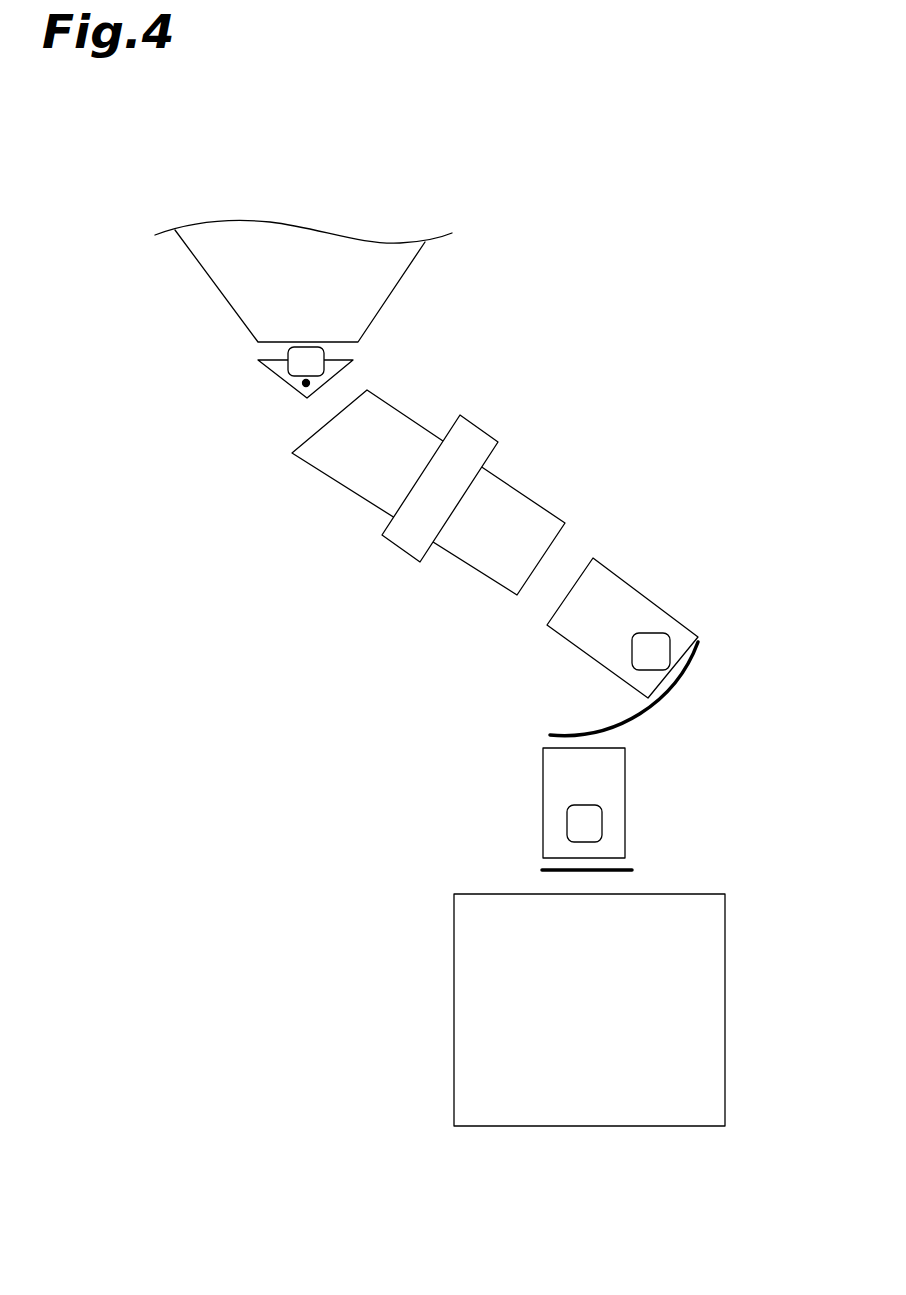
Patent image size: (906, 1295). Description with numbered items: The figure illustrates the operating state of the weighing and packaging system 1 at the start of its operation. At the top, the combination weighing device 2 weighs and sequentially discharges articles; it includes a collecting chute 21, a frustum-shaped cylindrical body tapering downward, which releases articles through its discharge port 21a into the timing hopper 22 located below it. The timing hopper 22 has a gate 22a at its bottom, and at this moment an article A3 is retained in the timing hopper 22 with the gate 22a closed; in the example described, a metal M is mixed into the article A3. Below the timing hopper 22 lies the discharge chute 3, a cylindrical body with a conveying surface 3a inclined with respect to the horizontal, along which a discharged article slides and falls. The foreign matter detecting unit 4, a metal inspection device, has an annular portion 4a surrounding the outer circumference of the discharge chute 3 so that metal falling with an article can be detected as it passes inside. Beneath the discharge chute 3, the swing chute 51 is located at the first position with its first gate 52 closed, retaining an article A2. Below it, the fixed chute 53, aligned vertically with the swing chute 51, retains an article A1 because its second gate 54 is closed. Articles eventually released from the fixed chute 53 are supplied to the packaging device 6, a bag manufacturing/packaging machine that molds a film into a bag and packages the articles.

The weighing and packaging system 1 is at (640, 225).
The combination weighing device 2 is at (315, 322).
The collecting chute 21 is at (395, 287).
The discharge port 21a is at (345, 343).
The timing hopper 22 is at (273, 376).
The gate 22a is at (290, 388).
The article A3 is at (324, 363).
The metal M is at (312, 383).
The discharge chute 3 is at (519, 491).
The conveying surface 3a is at (343, 480).
The foreign matter detecting unit 4 is at (466, 419).
The annular portion 4a is at (400, 549).
The swing chute 51 is at (640, 593).
The article A2 is at (650, 633).
The first gate 52 is at (690, 668).
The fixed chute 53 is at (625, 760).
The article A1 is at (602, 815).
The second gate 54 is at (627, 867).
The packaging device 6 is at (725, 923).